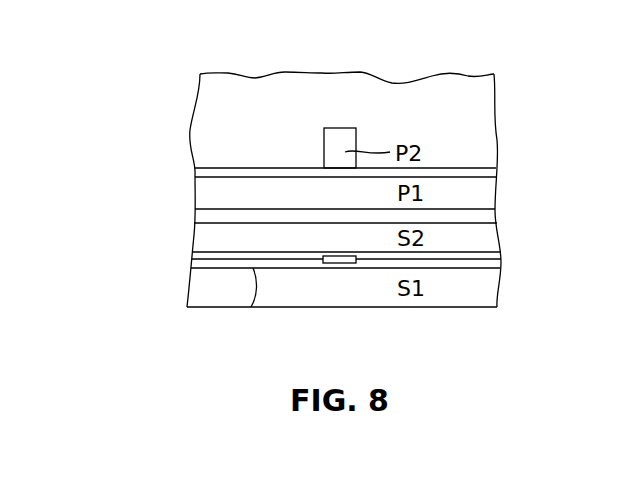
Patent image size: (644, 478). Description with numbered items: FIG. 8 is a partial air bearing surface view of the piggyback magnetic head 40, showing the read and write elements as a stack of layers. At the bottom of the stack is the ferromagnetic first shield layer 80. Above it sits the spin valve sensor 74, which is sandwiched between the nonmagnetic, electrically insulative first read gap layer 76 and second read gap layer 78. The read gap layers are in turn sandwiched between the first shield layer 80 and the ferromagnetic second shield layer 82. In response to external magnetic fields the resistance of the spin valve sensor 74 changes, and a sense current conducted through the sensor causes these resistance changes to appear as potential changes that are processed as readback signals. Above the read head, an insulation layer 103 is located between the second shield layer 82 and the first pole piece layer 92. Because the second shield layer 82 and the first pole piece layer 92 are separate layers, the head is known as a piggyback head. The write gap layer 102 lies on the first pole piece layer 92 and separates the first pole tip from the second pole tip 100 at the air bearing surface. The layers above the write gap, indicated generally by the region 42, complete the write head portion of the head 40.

The piggyback magnetic head 40 is at (513, 88).
The dielectric layer 42 is at (203, 107).
The write gap layer 102 is at (262, 168).
The first pole piece layer 92 is at (203, 197).
The insulation layer 103 is at (487, 216).
The second shield layer 82 is at (201, 246).
The first shield layer 80 is at (488, 291).
The second read gap layer 78 is at (458, 257).
The first read gap layer 76 is at (251, 307).
The spin valve sensor 74 is at (337, 263).
The second pole tip 100 is at (337, 135).